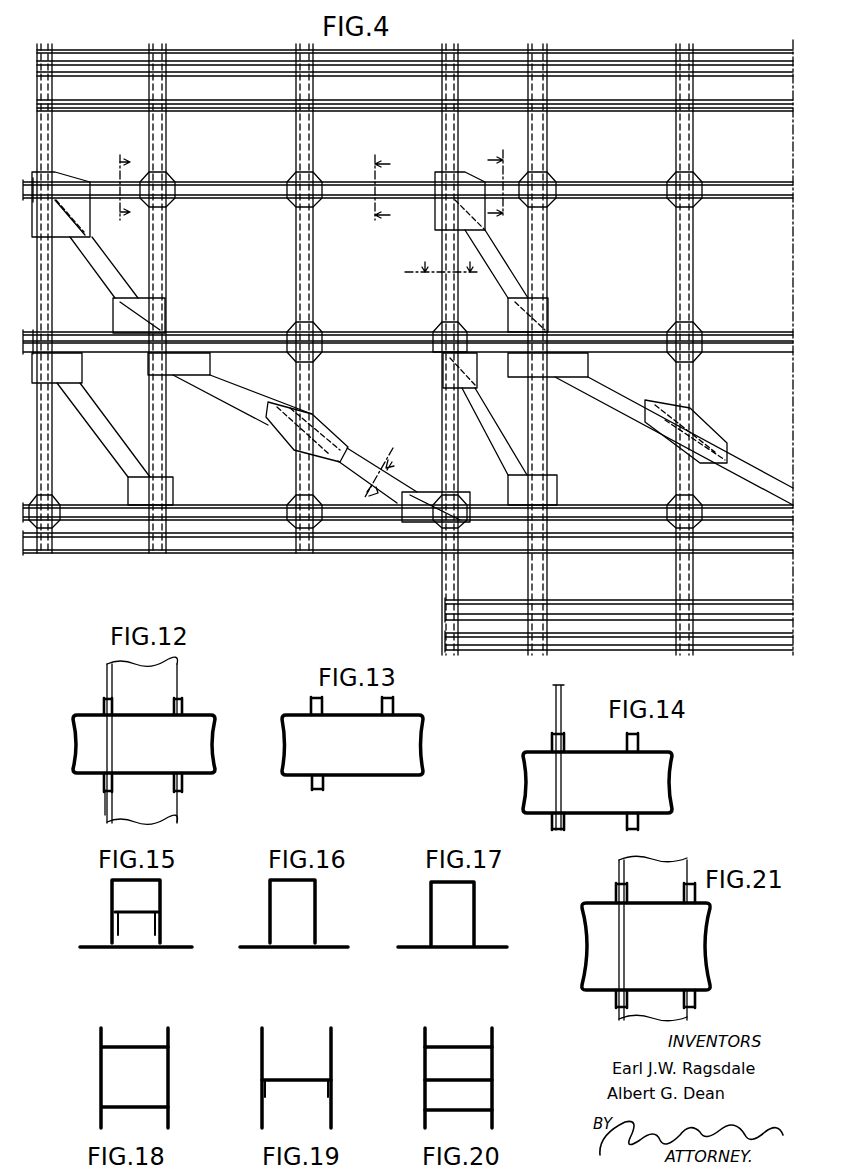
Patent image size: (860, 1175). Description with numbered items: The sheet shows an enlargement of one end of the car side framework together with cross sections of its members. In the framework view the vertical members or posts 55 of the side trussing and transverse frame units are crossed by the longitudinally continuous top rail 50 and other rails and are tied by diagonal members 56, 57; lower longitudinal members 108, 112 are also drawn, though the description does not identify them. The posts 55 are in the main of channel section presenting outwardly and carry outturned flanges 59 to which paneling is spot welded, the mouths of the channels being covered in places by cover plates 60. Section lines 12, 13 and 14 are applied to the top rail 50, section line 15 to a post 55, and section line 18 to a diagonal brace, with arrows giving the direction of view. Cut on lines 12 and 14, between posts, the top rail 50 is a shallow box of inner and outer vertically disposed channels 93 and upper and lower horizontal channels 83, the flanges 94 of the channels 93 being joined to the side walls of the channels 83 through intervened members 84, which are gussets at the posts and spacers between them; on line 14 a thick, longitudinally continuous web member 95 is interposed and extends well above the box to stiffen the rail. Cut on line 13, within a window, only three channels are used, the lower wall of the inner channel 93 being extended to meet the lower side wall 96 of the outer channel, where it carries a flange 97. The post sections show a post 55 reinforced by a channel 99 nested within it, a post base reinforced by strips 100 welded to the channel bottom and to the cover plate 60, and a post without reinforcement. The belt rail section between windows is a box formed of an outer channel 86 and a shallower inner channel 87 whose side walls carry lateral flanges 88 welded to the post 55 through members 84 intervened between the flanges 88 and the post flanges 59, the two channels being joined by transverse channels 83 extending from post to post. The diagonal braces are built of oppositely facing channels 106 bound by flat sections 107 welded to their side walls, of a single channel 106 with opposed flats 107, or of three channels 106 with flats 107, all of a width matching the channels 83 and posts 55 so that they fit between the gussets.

In FIG. 4, the section line 12 is at (135, 187).
In FIG. 4, the section line 13 is at (395, 188).
In FIG. 4, the section line 14 is at (490, 191).
In FIG. 4, the section line 15 is at (442, 256).
In FIG. 4, the section line 18 is at (398, 466).
In FIG. 12, the top rail 50 is at (160, 762).
In FIG. 14, the top rail 50 is at (614, 798).
In FIG. 4, the vertical member (post) 55 is at (166, 270).
In FIG. 15, the vertical member (post) 55 is at (160, 903).
In FIG. 17, the vertical member (post) 55 is at (430, 917).
In FIG. 4, the diagonal member 56 is at (632, 410).
In FIG. 4, the diagonal member 57 is at (491, 418).
In FIG. 12, the outturned flange 59 is at (140, 822).
In FIG. 21, the outturned flange 59 is at (690, 1015).
In FIG. 12, the cover plate 60 is at (110, 815).
In FIG. 16, the cover plate 60 is at (296, 942).
In FIG. 12, the transverse channel 83 is at (157, 713).
In FIG. 13, the transverse channel 83 is at (365, 700).
In FIG. 14, the transverse channel 83 is at (603, 752).
In FIG. 21, the transverse channel 83 is at (660, 890).
In FIG. 12, the intervened member (gusset or spacer) 84 is at (110, 788).
In FIG. 13, the intervened member (gusset or spacer) 84 is at (312, 697).
In FIG. 21, the intervened member (gusset or spacer) 84 is at (623, 1012).
In FIG. 21, the outer channel 86 is at (603, 990).
In FIG. 21, the inner channel 87 is at (710, 940).
In FIG. 21, the lateral flange 88 is at (692, 883).
In FIG. 12, the vertically disposed channel 93 is at (75, 750).
In FIG. 13, the vertically disposed channel 93 is at (282, 753).
In FIG. 14, the vertically disposed channel 93 is at (523, 793).
In FIG. 12, the flange of channel 94 is at (103, 788).
In FIG. 14, the flange of channel 94 is at (552, 826).
In FIG. 14, the web member 95 is at (556, 708).
In FIG. 13, the lower side wall 96 is at (355, 775).
In FIG. 13, the flange 97 is at (323, 786).
In FIG. 15, the reinforcing channel 99 is at (152, 922).
In FIG. 16, the reinforcing strip 100 is at (310, 883).
In FIG. 18, the channel 106 is at (132, 1046).
In FIG. 19, the channel 106 is at (317, 1071).
In FIG. 20, the channel 106 is at (470, 1040).
In FIG. 18, the flat section 107 is at (171, 1074).
In FIG. 19, the flat section 107 is at (332, 1074).
In FIG. 20, the flat section 107 is at (422, 1071).
In FIG. 4, the lower rail 108 is at (597, 606).
In FIG. 4, the lower rail 112 is at (640, 650).